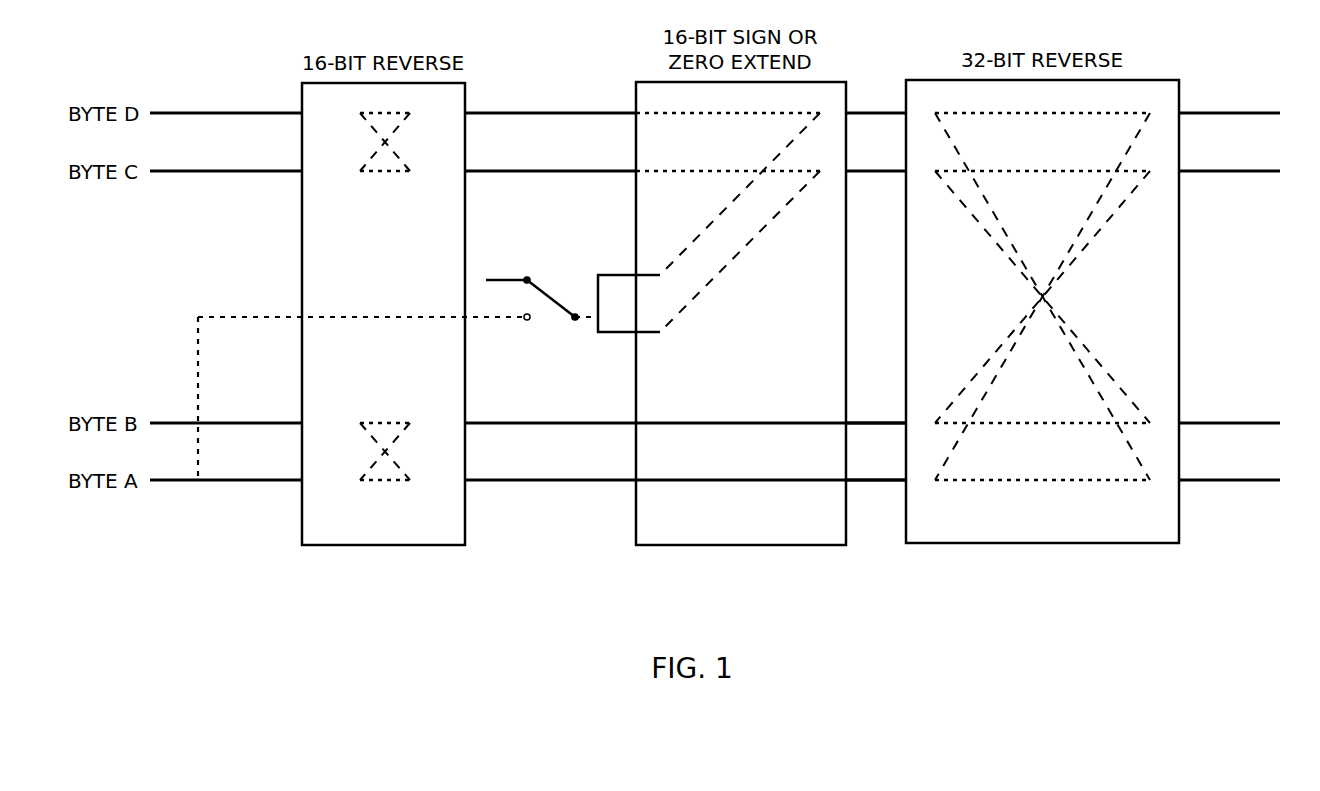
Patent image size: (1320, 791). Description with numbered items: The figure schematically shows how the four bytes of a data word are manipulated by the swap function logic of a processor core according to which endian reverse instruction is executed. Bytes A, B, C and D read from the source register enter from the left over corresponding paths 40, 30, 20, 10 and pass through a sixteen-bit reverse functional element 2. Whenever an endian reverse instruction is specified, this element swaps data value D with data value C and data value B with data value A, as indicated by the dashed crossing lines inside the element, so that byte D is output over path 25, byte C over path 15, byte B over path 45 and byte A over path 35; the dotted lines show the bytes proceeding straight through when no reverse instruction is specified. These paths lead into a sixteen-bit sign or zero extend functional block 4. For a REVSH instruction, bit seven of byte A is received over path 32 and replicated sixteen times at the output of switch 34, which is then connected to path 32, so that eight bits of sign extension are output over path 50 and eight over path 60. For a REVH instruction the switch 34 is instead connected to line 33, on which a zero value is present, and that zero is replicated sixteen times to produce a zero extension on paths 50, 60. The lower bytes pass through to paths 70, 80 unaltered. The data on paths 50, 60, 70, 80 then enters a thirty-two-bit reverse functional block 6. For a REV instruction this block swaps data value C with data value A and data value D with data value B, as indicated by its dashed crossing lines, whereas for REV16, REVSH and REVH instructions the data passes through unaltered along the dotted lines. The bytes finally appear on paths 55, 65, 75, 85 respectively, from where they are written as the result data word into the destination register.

The 16-bit reverse functional element 2 is at (384, 548).
The 16-bit sign or zero extend functional block 4 is at (740, 548).
The 32-bit reverse functional block 6 is at (1042, 546).
The path for byte D 10 is at (204, 113).
The path for byte C 20 is at (204, 171).
The path for byte B 30 is at (238, 423).
The path for byte A 40 is at (238, 480).
The output path of 16-bit reverse element 15 is at (544, 113).
The output path of 16-bit reverse element 25 is at (544, 171).
The output path of 16-bit reverse element 35 is at (544, 423).
The output path of 16-bit reverse element 45 is at (544, 480).
The output path of sign or zero extend block 50 is at (860, 113).
The output path of sign or zero extend block 60 is at (860, 171).
The output path of sign or zero extend block 70 is at (860, 423).
The output path of sign or zero extend block 80 is at (860, 480).
The result path 55 is at (1200, 113).
The result path 65 is at (1200, 171).
The result path 75 is at (1215, 423).
The result path 85 is at (1215, 480).
The path for bit 7 of byte A 32 is at (482, 325).
The zero value line 33 is at (510, 277).
The switch 34 is at (544, 317).